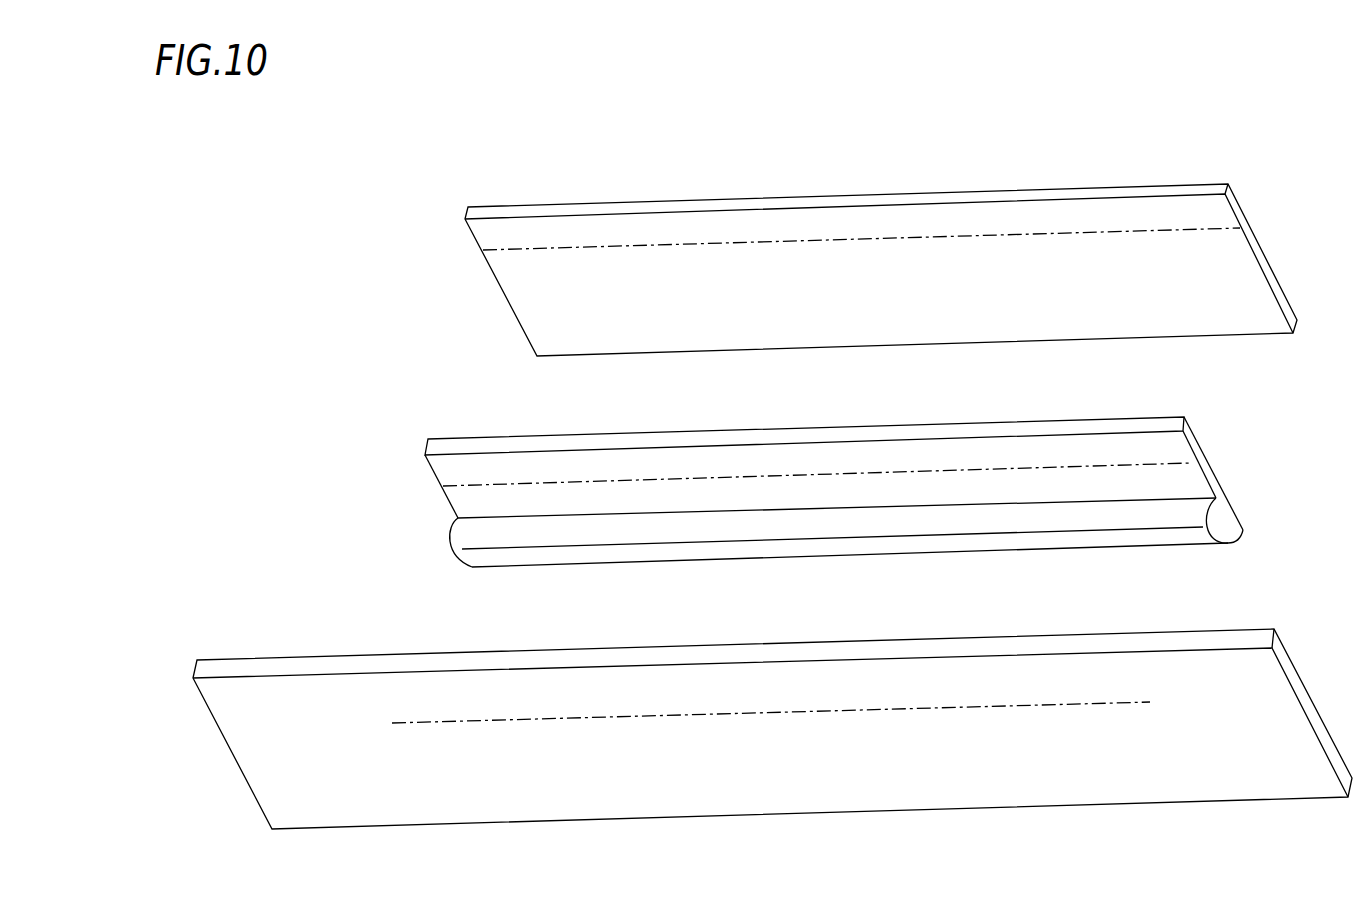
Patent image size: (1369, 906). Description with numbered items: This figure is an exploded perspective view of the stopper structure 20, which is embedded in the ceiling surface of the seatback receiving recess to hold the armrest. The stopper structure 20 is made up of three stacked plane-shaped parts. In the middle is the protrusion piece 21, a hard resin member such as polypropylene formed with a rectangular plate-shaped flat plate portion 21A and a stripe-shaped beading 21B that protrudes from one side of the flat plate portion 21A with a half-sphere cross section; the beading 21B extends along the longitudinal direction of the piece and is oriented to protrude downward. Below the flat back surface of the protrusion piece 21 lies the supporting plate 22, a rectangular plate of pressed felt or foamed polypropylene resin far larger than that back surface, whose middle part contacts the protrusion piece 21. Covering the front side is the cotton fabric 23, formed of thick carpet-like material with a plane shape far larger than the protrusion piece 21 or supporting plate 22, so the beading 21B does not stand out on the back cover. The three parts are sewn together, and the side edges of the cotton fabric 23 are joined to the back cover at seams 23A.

The stopper structure 20 is at (333, 268).
The protrusion piece 21 is at (460, 445).
The flat plate portion 21A is at (702, 463).
The beading 21B is at (810, 527).
The supporting plate 22 is at (492, 213).
The cotton fabric 23 is at (285, 664).
The seams 23A is at (603, 247).